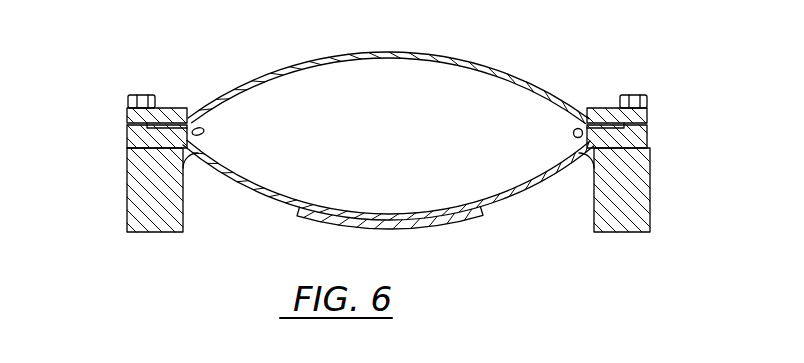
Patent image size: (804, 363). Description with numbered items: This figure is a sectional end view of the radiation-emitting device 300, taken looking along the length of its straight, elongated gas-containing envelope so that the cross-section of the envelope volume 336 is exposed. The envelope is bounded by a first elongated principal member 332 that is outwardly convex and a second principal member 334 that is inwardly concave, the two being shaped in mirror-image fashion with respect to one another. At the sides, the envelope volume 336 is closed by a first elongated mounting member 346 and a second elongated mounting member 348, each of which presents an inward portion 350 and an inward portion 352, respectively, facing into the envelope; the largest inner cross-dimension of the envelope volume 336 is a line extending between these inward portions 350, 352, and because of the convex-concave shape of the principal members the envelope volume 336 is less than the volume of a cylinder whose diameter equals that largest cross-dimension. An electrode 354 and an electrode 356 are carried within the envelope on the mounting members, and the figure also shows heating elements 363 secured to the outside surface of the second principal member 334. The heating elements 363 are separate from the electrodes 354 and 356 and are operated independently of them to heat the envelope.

The radiation-emitting device 300 is at (618, 68).
The first elongated principal member 332 is at (466, 60).
The second principal member 334 is at (507, 198).
The envelope volume 336 is at (402, 153).
The first elongated mounting member 346 is at (648, 137).
The second elongated mounting member 348 is at (137, 133).
The inward portion 350 is at (587, 143).
The inward portion 352 is at (188, 142).
The electrode 354 is at (573, 129).
The electrode 356 is at (205, 130).
The heating element 363 is at (368, 229).